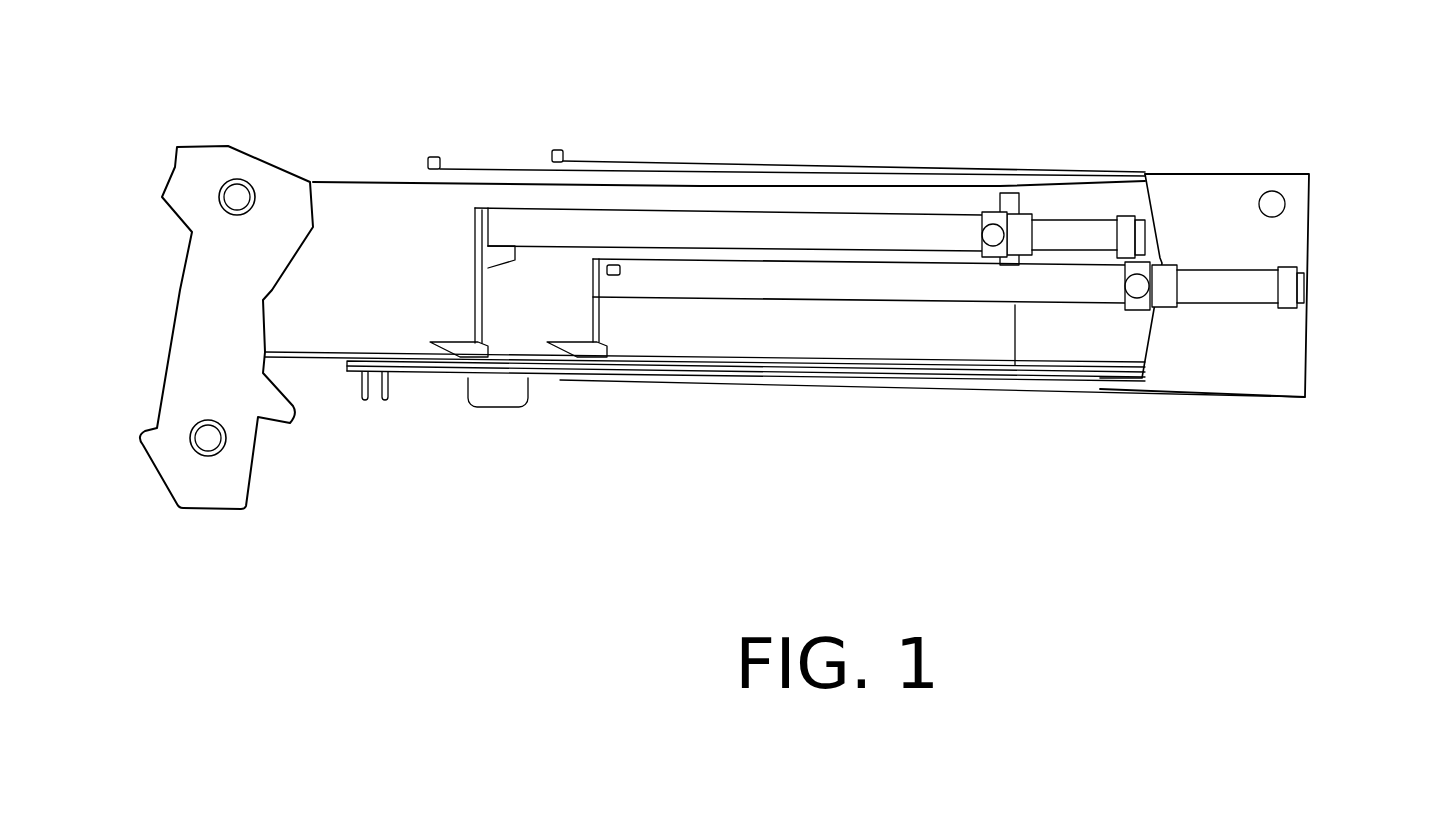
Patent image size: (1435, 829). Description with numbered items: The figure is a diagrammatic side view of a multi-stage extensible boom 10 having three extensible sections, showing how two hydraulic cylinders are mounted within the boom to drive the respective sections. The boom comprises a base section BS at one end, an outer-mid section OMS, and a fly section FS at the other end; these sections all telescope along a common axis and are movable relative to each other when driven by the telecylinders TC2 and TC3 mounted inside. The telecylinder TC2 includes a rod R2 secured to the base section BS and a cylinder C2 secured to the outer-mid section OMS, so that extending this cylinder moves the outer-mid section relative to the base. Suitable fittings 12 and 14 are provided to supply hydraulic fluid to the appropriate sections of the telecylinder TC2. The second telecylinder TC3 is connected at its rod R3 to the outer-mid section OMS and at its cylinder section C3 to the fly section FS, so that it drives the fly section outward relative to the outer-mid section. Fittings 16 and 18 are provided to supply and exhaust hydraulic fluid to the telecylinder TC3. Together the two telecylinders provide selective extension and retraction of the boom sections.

The multi-stage extensible boom 10 is at (710, 224).
The fly section FS is at (304, 295).
The base section BS is at (1247, 237).
The outer-mid section OMS is at (786, 131).
The cylinder section C3 is at (805, 212).
The cylinder C2 is at (730, 280).
The telecylinder TC3 is at (1046, 266).
The telecylinder TC2 is at (1268, 376).
The rod R3 is at (1068, 226).
The rod R2 is at (1233, 270).
The fitting 18 is at (993, 212).
The fitting 16 is at (1130, 216).
The fitting 14 is at (1140, 293).
The fitting 12 is at (1304, 277).